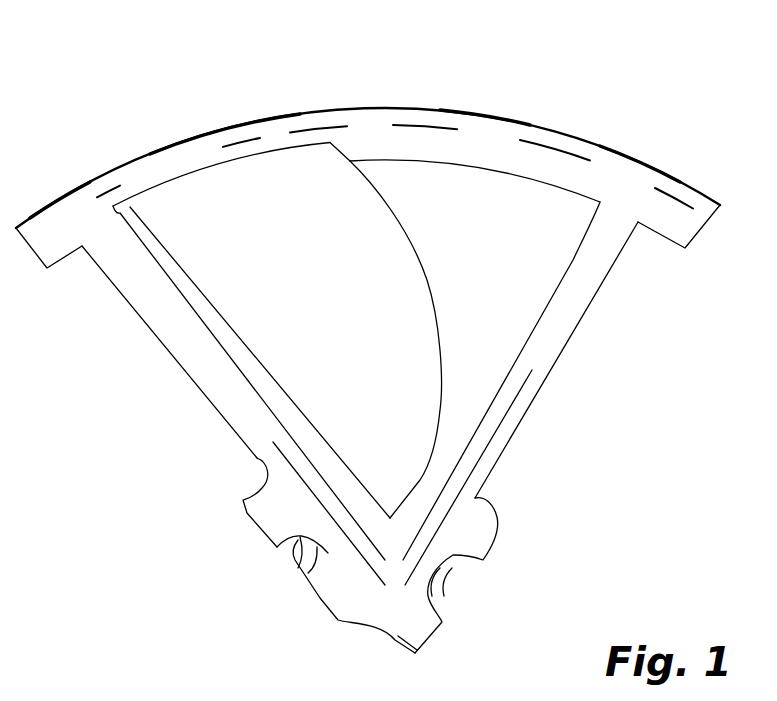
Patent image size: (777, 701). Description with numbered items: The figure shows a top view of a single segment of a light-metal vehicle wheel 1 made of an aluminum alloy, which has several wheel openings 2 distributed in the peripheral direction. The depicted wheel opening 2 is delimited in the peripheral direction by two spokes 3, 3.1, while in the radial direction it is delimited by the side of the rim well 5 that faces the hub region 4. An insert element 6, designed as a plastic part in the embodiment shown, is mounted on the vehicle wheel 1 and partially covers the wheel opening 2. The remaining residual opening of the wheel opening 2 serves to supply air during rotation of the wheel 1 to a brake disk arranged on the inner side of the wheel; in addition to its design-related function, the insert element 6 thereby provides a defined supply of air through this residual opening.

The vehicle wheel 1 is at (570, 103).
The wheel opening 2 is at (490, 263).
The spoke 3 is at (196, 345).
The spoke 3.1 is at (552, 338).
The hub region 4 is at (353, 643).
The rim well 5 is at (404, 141).
The insert element 6 is at (273, 238).